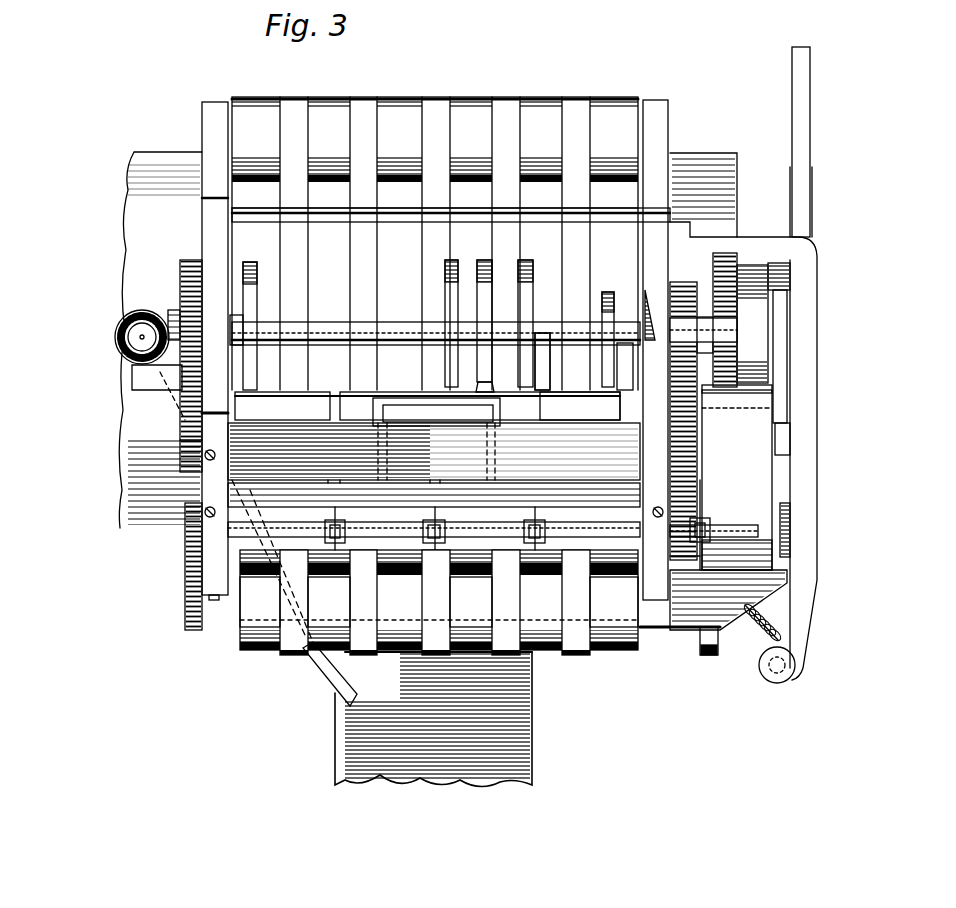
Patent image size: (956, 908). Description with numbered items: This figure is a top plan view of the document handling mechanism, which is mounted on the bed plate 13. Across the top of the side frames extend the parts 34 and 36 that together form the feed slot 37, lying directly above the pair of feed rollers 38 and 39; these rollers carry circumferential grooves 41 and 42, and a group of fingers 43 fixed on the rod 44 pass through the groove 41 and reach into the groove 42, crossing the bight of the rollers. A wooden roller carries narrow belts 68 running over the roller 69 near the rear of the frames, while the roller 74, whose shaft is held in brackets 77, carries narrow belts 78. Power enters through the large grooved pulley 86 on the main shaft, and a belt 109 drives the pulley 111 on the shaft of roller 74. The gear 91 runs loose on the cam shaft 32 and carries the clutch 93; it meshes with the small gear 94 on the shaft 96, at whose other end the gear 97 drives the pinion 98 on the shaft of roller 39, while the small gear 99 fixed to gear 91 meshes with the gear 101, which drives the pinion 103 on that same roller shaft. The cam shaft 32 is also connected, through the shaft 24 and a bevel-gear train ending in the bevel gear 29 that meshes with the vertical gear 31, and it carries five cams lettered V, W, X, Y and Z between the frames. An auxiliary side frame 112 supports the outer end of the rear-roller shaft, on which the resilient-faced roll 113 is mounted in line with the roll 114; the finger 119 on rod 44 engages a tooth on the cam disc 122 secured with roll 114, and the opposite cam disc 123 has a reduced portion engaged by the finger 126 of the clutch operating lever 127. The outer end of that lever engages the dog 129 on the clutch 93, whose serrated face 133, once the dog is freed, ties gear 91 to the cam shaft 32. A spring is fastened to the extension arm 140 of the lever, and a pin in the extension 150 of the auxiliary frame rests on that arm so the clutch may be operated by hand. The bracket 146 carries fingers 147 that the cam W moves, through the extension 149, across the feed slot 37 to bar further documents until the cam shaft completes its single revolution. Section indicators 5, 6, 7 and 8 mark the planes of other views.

The section line 5- 5 is at (642, 65).
The section line 6- 6 is at (508, 100).
The section line 7- 7 is at (475, 100).
The section line 8- 8 is at (340, 115).
The bed plate 13 is at (345, 746).
The shaft 24 is at (330, 666).
The bevel gear 29 is at (142, 333).
The vertical gear 31 is at (170, 318).
The cam shaft 32 is at (173, 318).
The part 34 is at (560, 452).
The part 36 is at (384, 493).
The feed slot 37 is at (560, 484).
The feed roller 38 is at (272, 572).
The feed roller 39 is at (302, 408).
The circumferential groove 41 is at (445, 570).
The circumferential groove 42 is at (542, 418).
The fingers 43 is at (438, 517).
The rod 44 is at (560, 575).
The narrow belts 68 is at (556, 82).
The roller 69 is at (435, 227).
The roller 74 is at (608, 652).
The brackets 77 is at (188, 556).
The narrow belts 78 is at (378, 652).
The grooved pulley 86 is at (810, 205).
The gear 91 is at (765, 275).
The clutch 93 is at (790, 340).
The small gear 94 is at (737, 319).
The shaft 96 is at (236, 325).
The gear 97 is at (182, 275).
The pinion 98 is at (185, 440).
The small gear 99 is at (670, 286).
The gear 101 is at (757, 371).
The pinion 103 is at (703, 443).
The belt 109 is at (708, 655).
The pulley 111 is at (700, 643).
The auxiliary side frame 112 is at (810, 488).
The roll 113 is at (737, 504).
The roll 114 is at (714, 523).
The finger 119 is at (700, 557).
The cam disc 122 is at (702, 508).
The cam disc 123 is at (775, 521).
The finger 126 is at (786, 592).
The clutch operating lever 127 is at (775, 394).
The dog 129 is at (780, 299).
The serrated face 133 is at (633, 370).
The extension arm 140 is at (790, 628).
The bracket 146 is at (478, 459).
The fingers 147 is at (490, 383).
The extension 149 is at (548, 333).
The extension 150 is at (800, 655).
The cam V is at (612, 296).
The cam W is at (528, 262).
The cam X is at (484, 262).
The cam Y is at (445, 291).
The cam Z is at (258, 297).